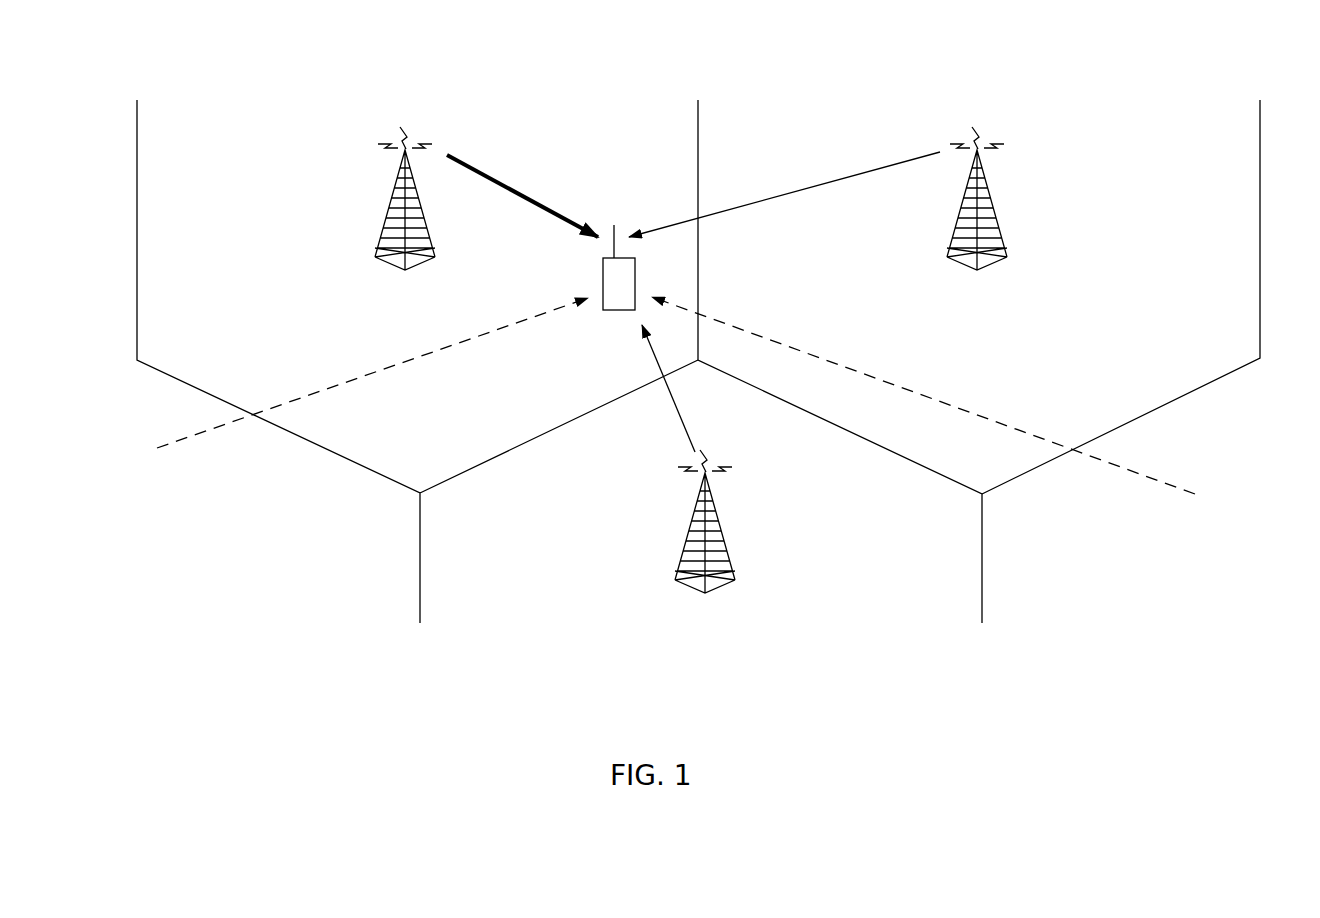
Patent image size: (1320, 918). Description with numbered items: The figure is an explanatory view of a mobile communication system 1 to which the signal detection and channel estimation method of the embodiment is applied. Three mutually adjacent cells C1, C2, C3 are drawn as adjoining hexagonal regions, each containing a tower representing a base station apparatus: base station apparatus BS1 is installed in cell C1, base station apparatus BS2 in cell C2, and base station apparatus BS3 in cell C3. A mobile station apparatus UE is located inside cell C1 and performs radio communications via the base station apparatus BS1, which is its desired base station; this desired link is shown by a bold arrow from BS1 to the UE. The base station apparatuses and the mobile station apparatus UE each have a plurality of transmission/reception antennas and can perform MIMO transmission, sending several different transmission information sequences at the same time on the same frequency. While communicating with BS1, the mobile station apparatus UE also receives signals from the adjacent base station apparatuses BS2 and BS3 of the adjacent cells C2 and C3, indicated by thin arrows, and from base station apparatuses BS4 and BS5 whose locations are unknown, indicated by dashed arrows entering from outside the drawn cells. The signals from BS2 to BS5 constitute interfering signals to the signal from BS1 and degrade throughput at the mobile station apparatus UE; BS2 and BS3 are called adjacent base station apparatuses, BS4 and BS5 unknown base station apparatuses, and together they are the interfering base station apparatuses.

The mobile communication system 1 is at (1056, 52).
The cell C1 is at (152, 223).
The cell C2 is at (958, 572).
The cell C3 is at (1227, 222).
The mobile station apparatus UE is at (617, 282).
The base station apparatus BS1 is at (486, 215).
The base station apparatus BS2 is at (688, 480).
The base station apparatus BS3 is at (818, 215).
The base station apparatus BS4 is at (355, 389).
The base station apparatus BS5 is at (948, 406).